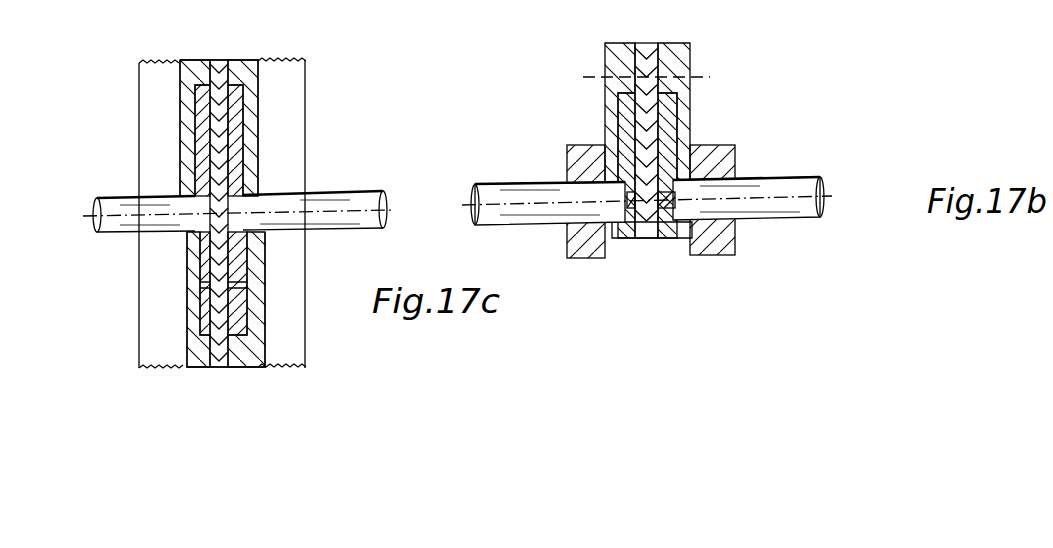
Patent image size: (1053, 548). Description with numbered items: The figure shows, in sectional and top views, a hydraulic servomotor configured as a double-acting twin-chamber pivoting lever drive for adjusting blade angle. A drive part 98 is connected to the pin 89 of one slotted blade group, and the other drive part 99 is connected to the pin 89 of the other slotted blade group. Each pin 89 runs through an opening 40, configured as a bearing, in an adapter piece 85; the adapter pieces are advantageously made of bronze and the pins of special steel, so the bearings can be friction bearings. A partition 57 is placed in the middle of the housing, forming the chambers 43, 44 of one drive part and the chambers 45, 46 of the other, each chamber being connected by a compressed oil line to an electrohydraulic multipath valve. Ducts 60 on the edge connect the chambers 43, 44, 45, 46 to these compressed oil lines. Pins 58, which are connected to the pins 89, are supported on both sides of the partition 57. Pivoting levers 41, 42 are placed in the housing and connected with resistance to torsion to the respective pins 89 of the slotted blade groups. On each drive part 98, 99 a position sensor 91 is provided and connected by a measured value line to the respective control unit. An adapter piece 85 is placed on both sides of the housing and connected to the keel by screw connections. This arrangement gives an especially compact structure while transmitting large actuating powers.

In FIG. 17C, the adapter piece 85 is at (143, 62).
In FIG. 17B, the adapter piece 85 is at (575, 143).
In FIG. 17C, the duct 60 is at (240, 92).
In FIG. 17C, the partition 57 is at (220, 67).
In FIG. 17B, the partition 57 is at (650, 240).
In FIG. 17C, the chamber 46 is at (197, 143).
In FIG. 17C, the chamber 44 is at (237, 147).
In FIG. 17C, the chamber 45 is at (197, 258).
In FIG. 17C, the chamber 43 is at (240, 298).
In FIG. 17C, the pin 89 is at (118, 193).
In FIG. 17B, the pin 89 is at (508, 192).
In FIG. 17C, the drive part 99 is at (203, 374).
In FIG. 17C, the drive part 98 is at (255, 374).
In FIG. 17B, the drive part 98 is at (524, 96).
In FIG. 17B, the position sensor 91 is at (617, 3).
In FIG. 17B, the pivoting lever 42 is at (618, 110).
In FIG. 17B, the pivoting lever 41 is at (668, 113).
In FIG. 17B, the pin 58 is at (637, 222).
In FIG. 17B, the opening 40 is at (573, 218).